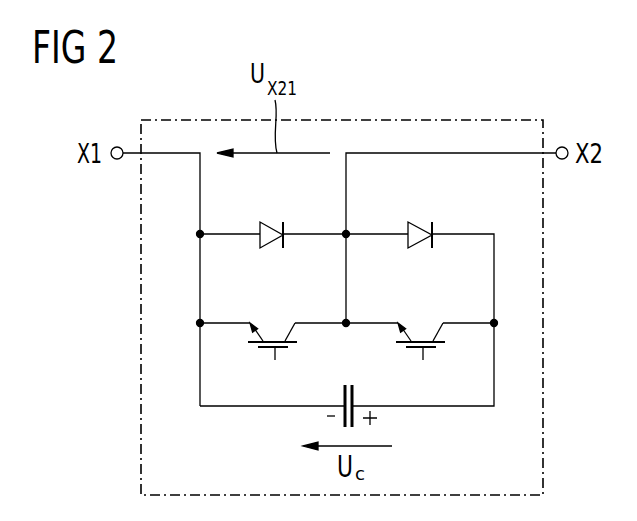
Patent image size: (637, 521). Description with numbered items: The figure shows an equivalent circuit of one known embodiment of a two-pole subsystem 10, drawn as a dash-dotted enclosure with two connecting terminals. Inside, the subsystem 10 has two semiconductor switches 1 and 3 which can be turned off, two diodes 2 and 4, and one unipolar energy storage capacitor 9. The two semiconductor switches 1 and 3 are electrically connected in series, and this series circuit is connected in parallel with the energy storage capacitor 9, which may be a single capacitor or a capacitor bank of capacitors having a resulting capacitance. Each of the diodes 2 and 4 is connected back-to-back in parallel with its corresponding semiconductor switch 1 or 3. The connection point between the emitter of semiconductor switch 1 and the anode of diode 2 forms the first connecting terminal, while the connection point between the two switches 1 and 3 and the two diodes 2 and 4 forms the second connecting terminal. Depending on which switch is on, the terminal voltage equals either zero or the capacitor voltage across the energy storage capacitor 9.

The semiconductor switch which can be turned off 1 is at (277, 338).
The diode 2 is at (277, 221).
The semiconductor switch which can be turned off 3 is at (425, 338).
The diode 4 is at (421, 221).
The unipolar energy storage capacitor 9 is at (347, 380).
The two-pole subsystem 10 is at (543, 314).